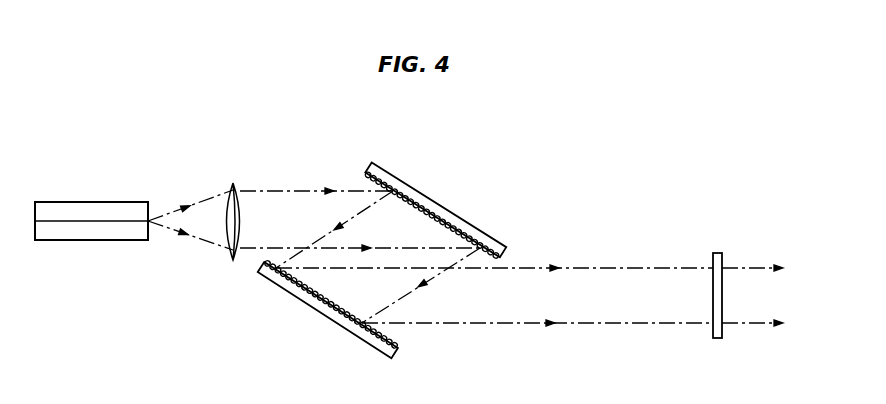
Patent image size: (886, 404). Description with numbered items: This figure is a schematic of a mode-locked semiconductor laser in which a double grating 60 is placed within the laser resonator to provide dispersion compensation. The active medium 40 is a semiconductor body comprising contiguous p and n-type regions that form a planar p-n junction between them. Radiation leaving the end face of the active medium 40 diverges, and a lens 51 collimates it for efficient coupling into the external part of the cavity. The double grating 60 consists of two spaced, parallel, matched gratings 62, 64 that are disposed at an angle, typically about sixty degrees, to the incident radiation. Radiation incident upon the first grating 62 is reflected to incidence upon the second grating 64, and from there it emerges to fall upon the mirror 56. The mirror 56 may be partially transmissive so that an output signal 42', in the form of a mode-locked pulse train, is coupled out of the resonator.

The active medium 40 is at (100, 184).
The lens 51 is at (238, 212).
The double grating 60 is at (512, 151).
The grating 62 is at (449, 214).
The grating 64 is at (322, 307).
The mirror 56 is at (713, 302).
The output signal 42' is at (752, 316).